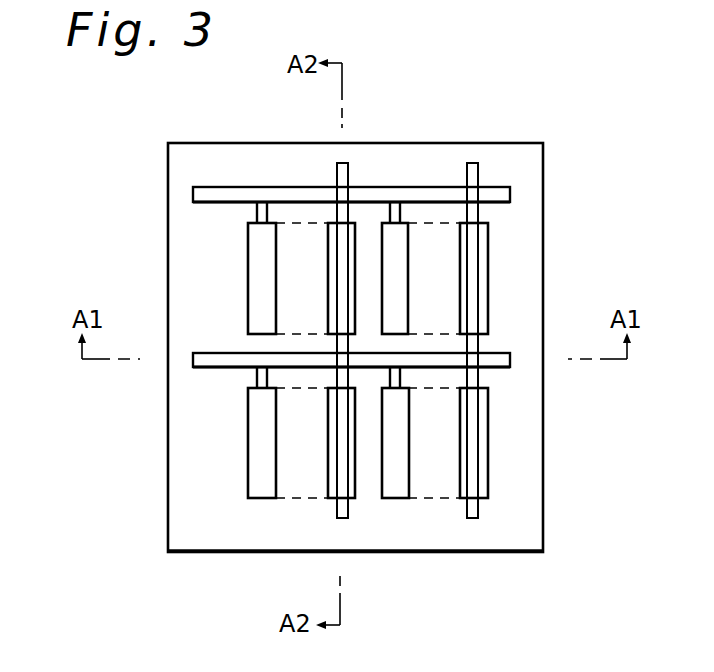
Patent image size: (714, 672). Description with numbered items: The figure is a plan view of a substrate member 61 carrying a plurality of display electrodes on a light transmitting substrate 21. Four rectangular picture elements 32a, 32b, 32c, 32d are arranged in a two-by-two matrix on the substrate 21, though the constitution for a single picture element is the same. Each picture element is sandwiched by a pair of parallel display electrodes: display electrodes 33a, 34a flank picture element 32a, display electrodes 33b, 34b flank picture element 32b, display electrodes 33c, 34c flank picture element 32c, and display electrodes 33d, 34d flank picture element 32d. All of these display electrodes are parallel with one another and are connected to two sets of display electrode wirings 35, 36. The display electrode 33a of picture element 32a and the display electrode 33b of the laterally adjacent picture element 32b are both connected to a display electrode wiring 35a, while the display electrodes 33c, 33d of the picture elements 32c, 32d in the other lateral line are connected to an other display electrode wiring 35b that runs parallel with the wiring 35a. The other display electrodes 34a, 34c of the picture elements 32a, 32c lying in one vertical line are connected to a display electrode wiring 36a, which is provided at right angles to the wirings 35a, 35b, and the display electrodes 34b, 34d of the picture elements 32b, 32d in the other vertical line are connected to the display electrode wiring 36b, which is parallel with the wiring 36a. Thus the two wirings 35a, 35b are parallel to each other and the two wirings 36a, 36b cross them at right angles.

The light transmitting substrate 21 is at (544, 176).
The substrate member 61 is at (271, 120).
The picture element 32a is at (310, 230).
The picture element 32b is at (447, 262).
The picture element 32c is at (293, 468).
The picture element 32d is at (442, 422).
The display electrode 33a is at (257, 310).
The display electrode 33b is at (400, 261).
The display electrode 33c is at (260, 420).
The display electrode 33d is at (393, 487).
The display electrode 34a is at (337, 293).
The display electrode 34b is at (478, 282).
The display electrode 34c is at (333, 487).
The display electrode 34d is at (477, 477).
The display electrode wirings 35 is at (95, 202).
The display electrode wiring 35a is at (205, 197).
The display electrode wiring 35b is at (207, 358).
The display electrode wirings 36 is at (497, 80).
The display electrode wiring 36a is at (352, 175).
The display electrode wiring 36b is at (473, 180).